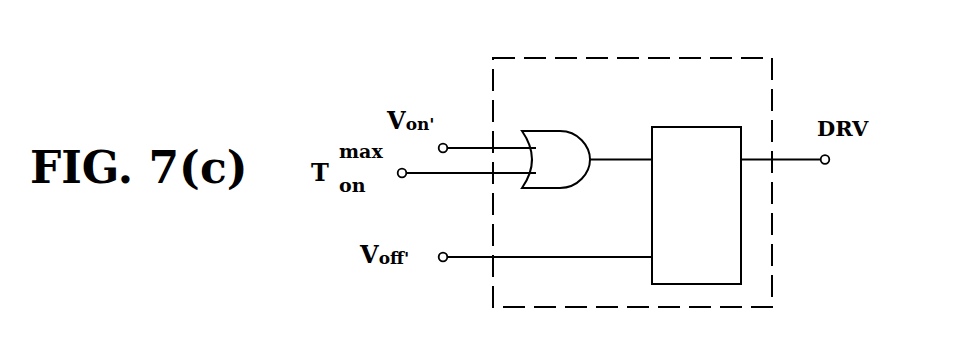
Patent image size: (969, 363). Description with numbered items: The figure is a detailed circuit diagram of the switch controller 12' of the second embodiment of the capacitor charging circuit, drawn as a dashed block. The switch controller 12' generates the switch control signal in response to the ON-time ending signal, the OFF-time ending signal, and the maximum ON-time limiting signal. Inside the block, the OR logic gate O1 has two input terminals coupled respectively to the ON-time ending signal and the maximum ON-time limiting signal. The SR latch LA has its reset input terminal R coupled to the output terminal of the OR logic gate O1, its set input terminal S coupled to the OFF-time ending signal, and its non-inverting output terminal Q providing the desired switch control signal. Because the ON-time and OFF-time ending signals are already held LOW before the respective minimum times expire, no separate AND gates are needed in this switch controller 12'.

The switch controller 12' is at (665, 172).
The OR logic gate O1 is at (544, 189).
The SR latch LA is at (694, 127).